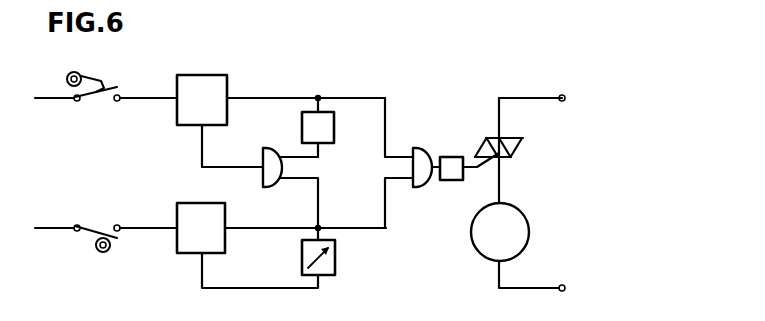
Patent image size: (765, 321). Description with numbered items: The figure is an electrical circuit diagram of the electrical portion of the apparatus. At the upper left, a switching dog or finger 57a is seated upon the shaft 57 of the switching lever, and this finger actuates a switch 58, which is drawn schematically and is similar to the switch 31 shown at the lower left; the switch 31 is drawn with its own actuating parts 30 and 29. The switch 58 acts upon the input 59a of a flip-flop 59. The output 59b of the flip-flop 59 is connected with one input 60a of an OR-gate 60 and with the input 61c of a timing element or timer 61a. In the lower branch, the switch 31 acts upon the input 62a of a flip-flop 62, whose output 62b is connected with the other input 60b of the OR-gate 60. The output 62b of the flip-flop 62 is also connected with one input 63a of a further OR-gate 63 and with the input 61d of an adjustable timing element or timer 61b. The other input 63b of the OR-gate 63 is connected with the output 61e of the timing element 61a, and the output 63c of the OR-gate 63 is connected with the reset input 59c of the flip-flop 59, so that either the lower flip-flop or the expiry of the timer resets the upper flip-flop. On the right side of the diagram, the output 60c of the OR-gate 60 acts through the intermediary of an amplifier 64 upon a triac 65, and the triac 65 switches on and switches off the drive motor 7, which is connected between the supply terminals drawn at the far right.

The shaft 57 is at (67, 76).
The switching dog or finger 57a is at (92, 83).
The switch 58 is at (97, 101).
The flip-flop 59 is at (218, 75).
The input of flip-flop 59 59a is at (157, 98).
The output of flip-flop 59 59b is at (265, 97).
The reset input of flip-flop 59 59c is at (200, 142).
The timing element or timer 61a is at (334, 125).
The adjustable timing element or timer 61b is at (335, 262).
The input of timing element 61a 61c is at (321, 103).
The input of adjustable timing element 61b 61d is at (322, 233).
The output of timing element 61a 61e is at (322, 144).
The further OR-gate 63 is at (266, 182).
The one input of OR-gate 63 63a is at (300, 180).
The other input of OR-gate 63 63b is at (298, 157).
The output of OR-gate 63 63c is at (255, 167).
The OR-gate 60 is at (422, 147).
The one input of OR-gate 60 60a is at (400, 155).
The other input of OR-gate 60 60b is at (403, 181).
The output of OR-gate 60 60c is at (435, 162).
The amplifier 64 is at (452, 181).
The triac 65 is at (517, 137).
The drive motor 7 is at (529, 230).
The switch 31 is at (95, 232).
The cam follower roller 30 is at (97, 248).
The roller axle 29 is at (106, 252).
The flip-flop 62 is at (222, 246).
The input of flip-flop 62 62a is at (158, 227).
The output of flip-flop 62 62b is at (241, 228).